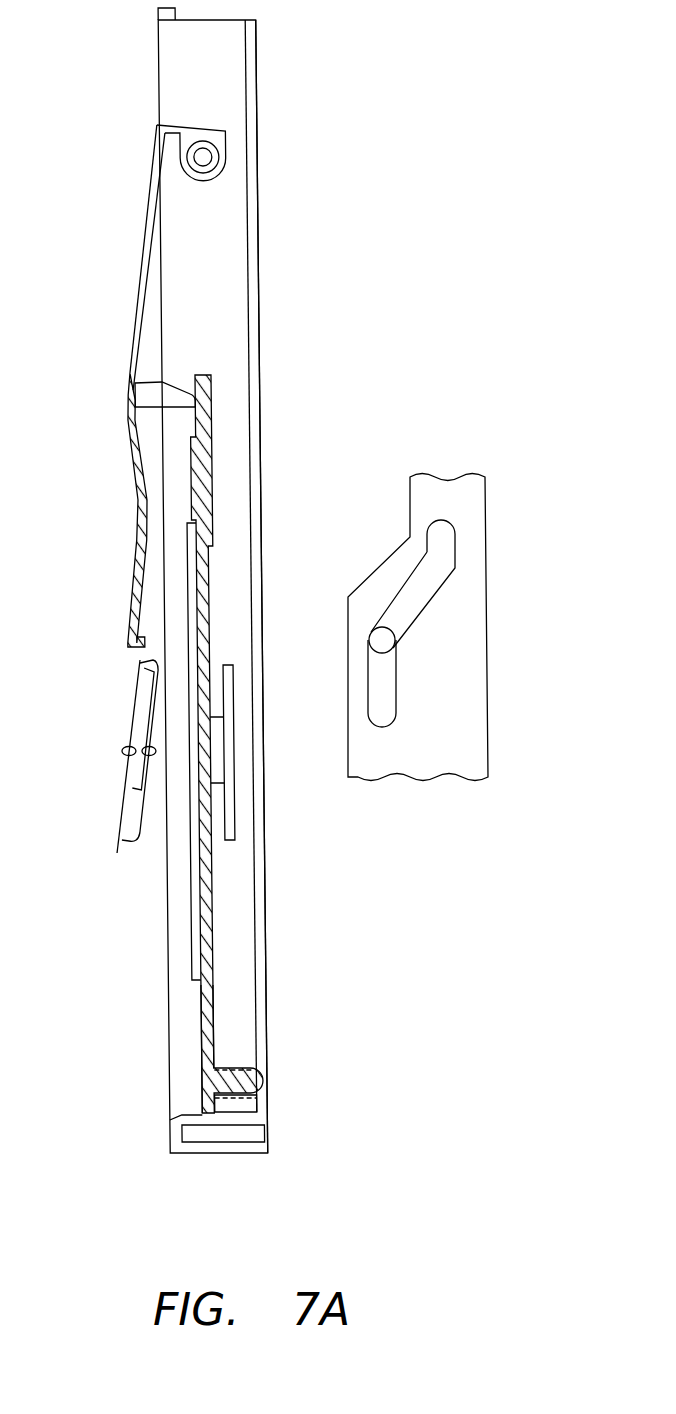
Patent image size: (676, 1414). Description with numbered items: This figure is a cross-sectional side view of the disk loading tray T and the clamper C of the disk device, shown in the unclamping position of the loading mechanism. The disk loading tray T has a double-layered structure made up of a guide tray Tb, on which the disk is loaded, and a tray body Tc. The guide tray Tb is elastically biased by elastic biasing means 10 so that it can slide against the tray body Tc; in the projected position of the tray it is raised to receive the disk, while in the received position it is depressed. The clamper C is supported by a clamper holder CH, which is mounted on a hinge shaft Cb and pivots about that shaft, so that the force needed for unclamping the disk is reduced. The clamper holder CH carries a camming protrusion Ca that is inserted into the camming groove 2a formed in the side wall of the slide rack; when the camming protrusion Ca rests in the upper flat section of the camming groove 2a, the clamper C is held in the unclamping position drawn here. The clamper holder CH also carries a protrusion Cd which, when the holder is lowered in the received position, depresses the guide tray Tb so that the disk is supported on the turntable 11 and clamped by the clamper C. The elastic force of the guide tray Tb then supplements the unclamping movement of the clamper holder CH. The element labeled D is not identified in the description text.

The disk loading tray T is at (215, 1153).
The tray body Tc is at (260, 978).
The guide tray Tb is at (200, 1047).
The door D is at (198, 942).
The clamper C is at (125, 828).
The clamper holder CH is at (147, 263).
The hinge shaft Cb is at (203, 157).
The protrusion Cd is at (147, 395).
The camming protrusion Ca is at (387, 642).
The camming groove 2a is at (443, 543).
The elastic biasing means 10 is at (243, 1070).
The turntable 11 is at (230, 688).